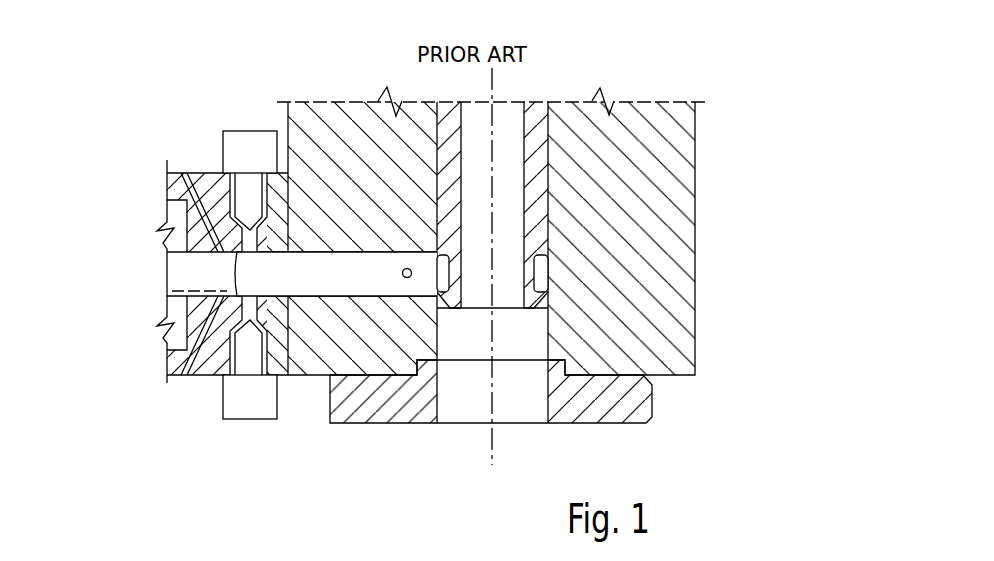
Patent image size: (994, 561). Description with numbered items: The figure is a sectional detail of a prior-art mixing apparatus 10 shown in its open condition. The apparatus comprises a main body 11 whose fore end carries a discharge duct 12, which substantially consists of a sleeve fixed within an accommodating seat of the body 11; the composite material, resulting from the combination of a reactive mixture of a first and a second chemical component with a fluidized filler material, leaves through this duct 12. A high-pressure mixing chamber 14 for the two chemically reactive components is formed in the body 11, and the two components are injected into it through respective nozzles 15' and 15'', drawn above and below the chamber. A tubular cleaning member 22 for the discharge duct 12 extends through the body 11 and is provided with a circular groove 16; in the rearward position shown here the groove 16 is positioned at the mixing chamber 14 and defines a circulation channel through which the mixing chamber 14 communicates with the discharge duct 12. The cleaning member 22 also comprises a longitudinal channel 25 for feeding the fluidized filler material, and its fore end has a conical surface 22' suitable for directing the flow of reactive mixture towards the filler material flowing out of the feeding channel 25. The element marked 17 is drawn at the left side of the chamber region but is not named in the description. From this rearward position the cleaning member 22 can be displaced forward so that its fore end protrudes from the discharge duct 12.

The mixing apparatus 10 is at (739, 97).
The main body 11 is at (647, 183).
The discharge duct 12 is at (455, 340).
The high-pressure mixing chamber 14 is at (262, 276).
The nozzle 15' is at (209, 162).
The nozzle 15'' is at (211, 389).
The circular groove 16 is at (542, 267).
The clamp slot 17 is at (187, 269).
The tubular cleaning member 22 is at (390, 169).
The conical surface 22' is at (650, 229).
The longitudinal channel 25 is at (502, 155).